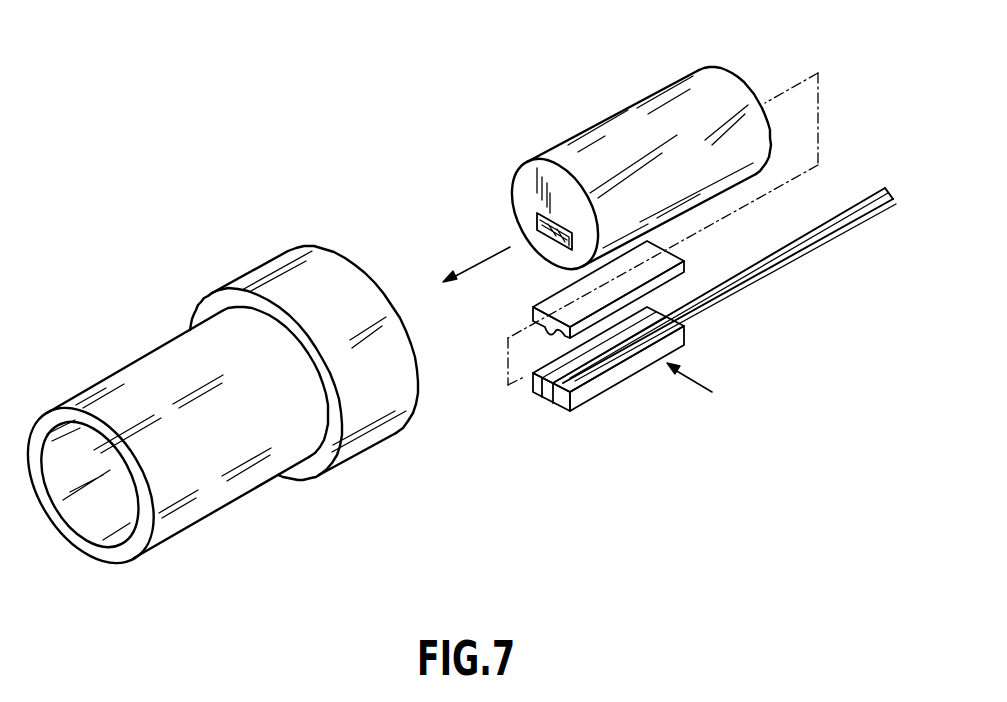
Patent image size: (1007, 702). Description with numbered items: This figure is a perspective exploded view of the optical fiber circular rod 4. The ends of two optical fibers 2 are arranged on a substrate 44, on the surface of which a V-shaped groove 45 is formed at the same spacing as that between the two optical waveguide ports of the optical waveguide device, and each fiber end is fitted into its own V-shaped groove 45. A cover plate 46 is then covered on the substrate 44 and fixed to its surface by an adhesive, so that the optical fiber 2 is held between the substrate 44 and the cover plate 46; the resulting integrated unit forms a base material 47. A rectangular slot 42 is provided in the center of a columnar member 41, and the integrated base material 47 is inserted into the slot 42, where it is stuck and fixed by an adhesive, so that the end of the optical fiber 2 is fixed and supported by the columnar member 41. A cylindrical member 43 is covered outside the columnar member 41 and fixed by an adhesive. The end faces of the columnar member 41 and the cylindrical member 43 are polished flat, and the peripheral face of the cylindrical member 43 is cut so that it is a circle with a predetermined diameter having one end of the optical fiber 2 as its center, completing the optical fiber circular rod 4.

The optical fiber 2 is at (809, 250).
The optical fiber circular rod 4 is at (210, 353).
The columnar member 41 is at (607, 142).
The rectangular slot 42 is at (537, 214).
The cylindrical member 43 is at (245, 468).
The substrate 44 is at (610, 397).
The V-shaped groove 45 is at (542, 379).
The cover plate 46 is at (533, 305).
The base material 47 is at (706, 386).